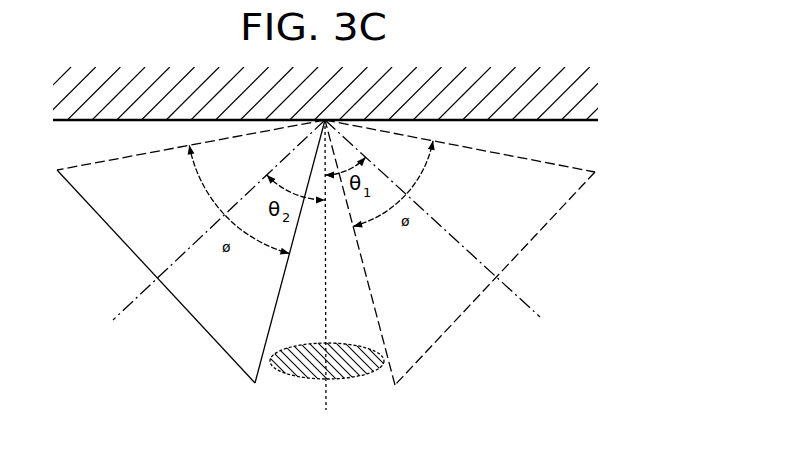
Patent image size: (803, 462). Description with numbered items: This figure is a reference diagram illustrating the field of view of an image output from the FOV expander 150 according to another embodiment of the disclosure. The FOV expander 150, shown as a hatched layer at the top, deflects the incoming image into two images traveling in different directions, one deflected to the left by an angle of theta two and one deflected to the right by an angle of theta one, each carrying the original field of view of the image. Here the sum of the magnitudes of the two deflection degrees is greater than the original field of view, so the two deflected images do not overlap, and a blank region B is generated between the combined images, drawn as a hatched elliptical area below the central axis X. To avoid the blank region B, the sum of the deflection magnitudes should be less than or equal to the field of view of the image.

The FOV expander 150 is at (585, 100).
The blank region B is at (292, 376).
The central axis X is at (326, 279).